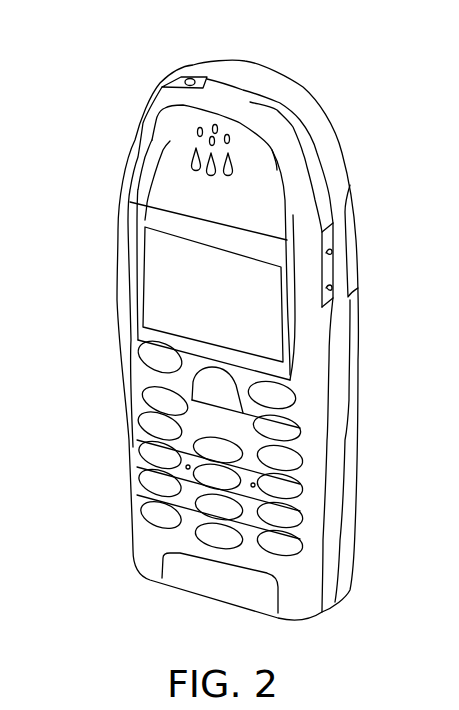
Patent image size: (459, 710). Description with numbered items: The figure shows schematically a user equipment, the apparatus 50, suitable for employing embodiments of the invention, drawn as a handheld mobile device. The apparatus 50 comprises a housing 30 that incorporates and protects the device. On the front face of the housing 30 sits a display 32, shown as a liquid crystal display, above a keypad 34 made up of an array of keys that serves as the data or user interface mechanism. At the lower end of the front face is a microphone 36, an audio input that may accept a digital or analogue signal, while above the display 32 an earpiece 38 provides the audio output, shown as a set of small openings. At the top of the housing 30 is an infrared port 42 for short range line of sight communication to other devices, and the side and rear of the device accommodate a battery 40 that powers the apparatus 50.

The apparatus 50 is at (313, 73).
The housing 30 is at (337, 183).
The infrared port 42 is at (228, 85).
The earpiece 38 is at (195, 147).
The display 32 is at (265, 330).
The keypad 34 is at (278, 557).
The microphone 36 is at (175, 578).
The battery 40 is at (350, 537).